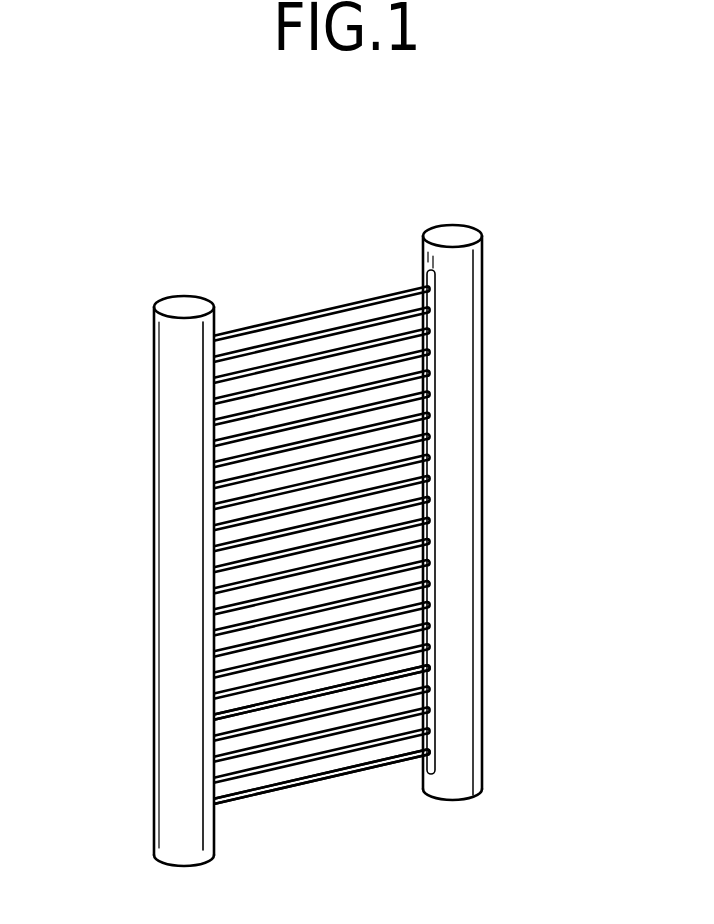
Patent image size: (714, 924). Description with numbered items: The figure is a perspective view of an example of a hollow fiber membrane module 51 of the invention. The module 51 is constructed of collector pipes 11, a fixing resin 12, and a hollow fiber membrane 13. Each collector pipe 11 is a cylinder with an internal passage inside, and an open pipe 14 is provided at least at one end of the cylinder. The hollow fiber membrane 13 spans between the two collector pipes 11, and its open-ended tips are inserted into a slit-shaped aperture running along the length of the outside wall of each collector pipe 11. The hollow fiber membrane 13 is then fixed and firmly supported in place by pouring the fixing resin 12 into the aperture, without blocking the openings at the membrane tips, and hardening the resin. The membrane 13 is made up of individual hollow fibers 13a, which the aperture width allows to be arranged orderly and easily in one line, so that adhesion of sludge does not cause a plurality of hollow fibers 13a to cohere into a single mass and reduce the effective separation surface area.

The hollow fiber membrane module 51 is at (148, 65).
The collector pipe 11 is at (172, 460).
The fixing resin 12 is at (428, 538).
The hollow fiber membrane 13 is at (268, 320).
The hollow fibers 13a is at (287, 766).
The open pipe 14 is at (458, 236).